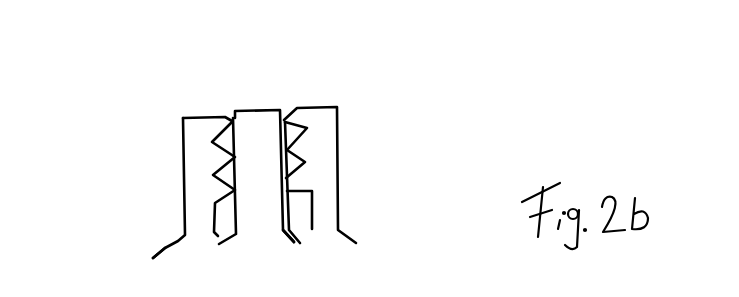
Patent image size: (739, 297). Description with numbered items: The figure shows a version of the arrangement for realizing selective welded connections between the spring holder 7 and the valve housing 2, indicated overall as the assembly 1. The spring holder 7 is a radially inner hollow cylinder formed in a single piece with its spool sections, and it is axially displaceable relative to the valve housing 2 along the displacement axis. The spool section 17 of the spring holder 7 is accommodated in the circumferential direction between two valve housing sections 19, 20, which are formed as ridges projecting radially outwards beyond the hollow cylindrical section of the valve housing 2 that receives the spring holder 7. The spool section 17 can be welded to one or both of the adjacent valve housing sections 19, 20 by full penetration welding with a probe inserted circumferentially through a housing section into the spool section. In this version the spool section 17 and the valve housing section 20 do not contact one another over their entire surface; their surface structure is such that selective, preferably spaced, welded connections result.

The connection arrangement 1 is at (38, 139).
The valve housing 2 is at (203, 223).
The spring holder 7 is at (278, 233).
The spool section 17 is at (255, 127).
The valve housing section 19 is at (195, 143).
The valve housing section 20 is at (317, 146).